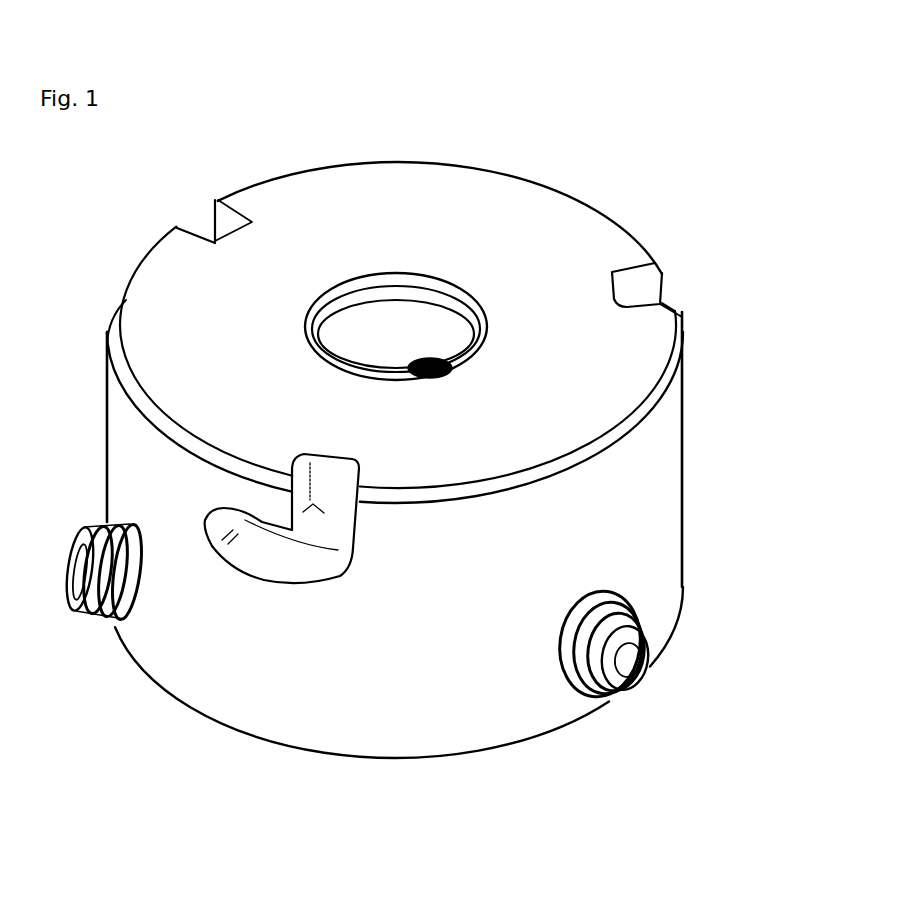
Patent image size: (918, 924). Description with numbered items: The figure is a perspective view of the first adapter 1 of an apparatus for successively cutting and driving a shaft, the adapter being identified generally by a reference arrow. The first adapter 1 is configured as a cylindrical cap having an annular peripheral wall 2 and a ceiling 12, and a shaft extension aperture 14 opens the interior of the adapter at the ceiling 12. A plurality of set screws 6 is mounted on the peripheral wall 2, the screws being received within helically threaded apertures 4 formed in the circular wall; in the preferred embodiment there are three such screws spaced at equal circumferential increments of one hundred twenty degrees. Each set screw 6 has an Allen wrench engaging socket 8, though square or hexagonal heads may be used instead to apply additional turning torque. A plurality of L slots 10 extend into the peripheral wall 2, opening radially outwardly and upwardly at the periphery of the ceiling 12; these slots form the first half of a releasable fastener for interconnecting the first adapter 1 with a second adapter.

The first adapter 1 is at (540, 176).
The annular peripheral wall 2 is at (655, 487).
The helically threaded apertures 4 is at (137, 600).
The set screws 6 is at (95, 526).
The Allen wrench engaging sockets 8 is at (627, 655).
The L slots 10 is at (203, 223).
The ceiling 12 is at (352, 218).
The shaft extension aperture 14 is at (398, 317).